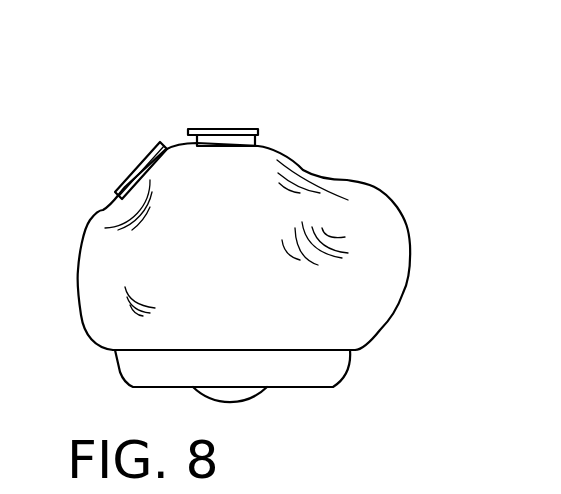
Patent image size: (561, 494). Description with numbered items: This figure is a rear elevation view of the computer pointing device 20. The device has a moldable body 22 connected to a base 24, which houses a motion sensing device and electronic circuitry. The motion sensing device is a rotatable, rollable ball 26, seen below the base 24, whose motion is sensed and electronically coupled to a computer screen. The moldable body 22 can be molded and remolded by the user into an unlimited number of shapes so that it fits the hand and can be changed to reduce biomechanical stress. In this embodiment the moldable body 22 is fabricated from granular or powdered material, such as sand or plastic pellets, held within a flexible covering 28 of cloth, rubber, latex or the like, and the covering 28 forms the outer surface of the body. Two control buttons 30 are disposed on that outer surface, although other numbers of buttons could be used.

The computer pointing device 20 is at (342, 137).
The moldable body 22 is at (402, 293).
The base 24 is at (310, 387).
The ball 26 is at (253, 400).
The covering 28 is at (237, 270).
The control button 30 is at (187, 130).